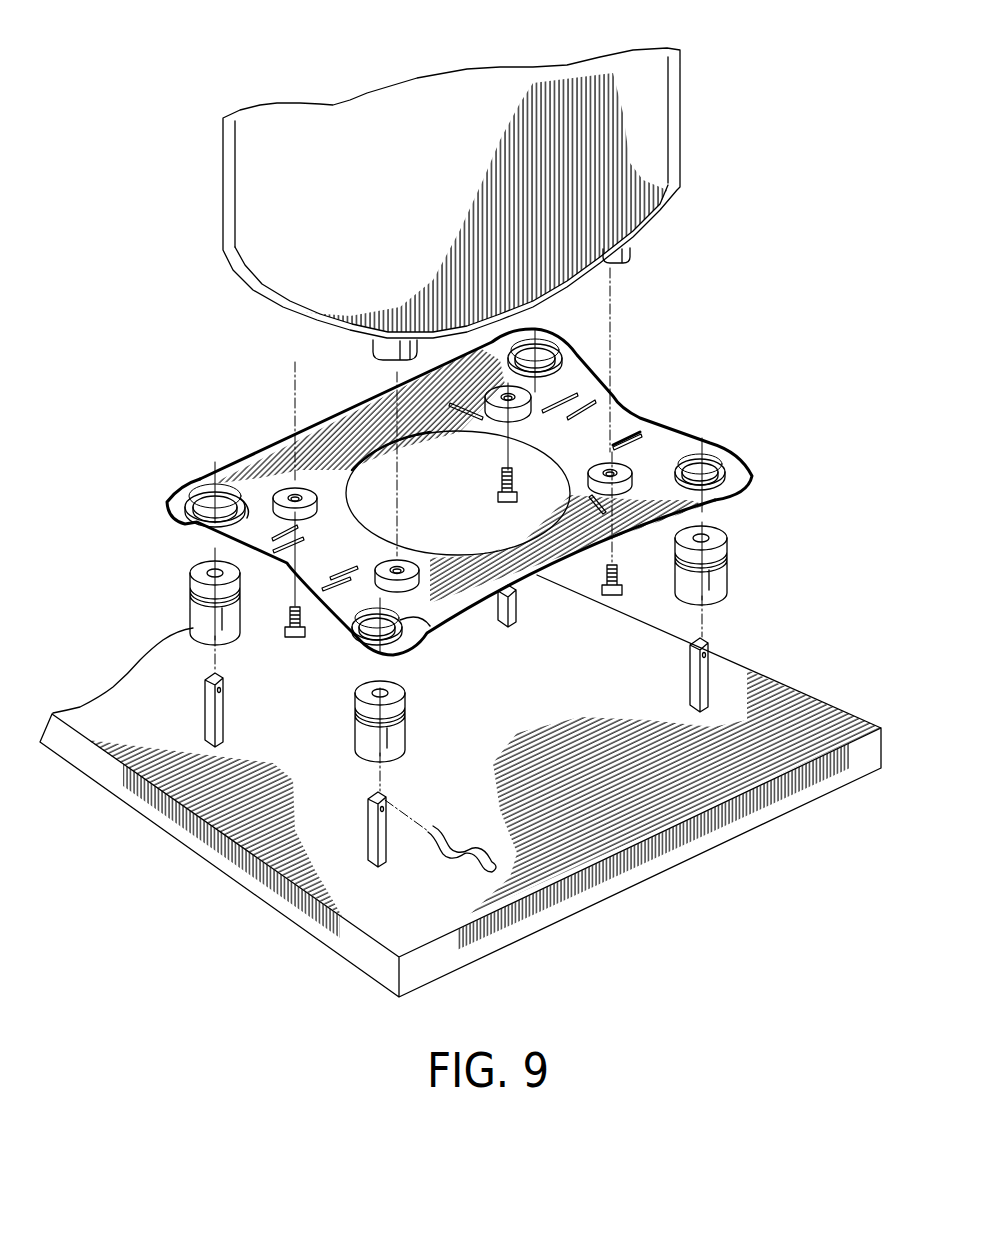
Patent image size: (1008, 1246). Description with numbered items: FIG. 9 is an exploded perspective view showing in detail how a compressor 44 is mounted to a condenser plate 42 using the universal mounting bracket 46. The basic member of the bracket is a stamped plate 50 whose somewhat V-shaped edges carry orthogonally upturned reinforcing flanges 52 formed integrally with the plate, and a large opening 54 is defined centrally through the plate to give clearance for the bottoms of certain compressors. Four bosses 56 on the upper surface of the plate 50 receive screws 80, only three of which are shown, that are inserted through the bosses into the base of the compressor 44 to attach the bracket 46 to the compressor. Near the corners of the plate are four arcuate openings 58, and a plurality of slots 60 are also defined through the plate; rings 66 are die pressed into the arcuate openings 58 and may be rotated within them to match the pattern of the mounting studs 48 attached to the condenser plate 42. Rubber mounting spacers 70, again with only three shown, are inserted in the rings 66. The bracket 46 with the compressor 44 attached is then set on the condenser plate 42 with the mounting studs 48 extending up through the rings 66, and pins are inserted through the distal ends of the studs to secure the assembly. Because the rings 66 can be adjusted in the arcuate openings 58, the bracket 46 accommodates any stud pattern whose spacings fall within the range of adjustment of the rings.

The condenser plate 42 is at (788, 708).
The compressor 44 is at (657, 101).
The universal mounting bracket 46 is at (762, 360).
The mounting studs 48 is at (518, 597).
The stamped plate 50 is at (345, 443).
The reinforcing flanges 52 is at (270, 452).
The large opening 54 is at (565, 467).
The bosses 56 is at (385, 562).
The arcuate openings 58 is at (528, 338).
The slots 60 is at (637, 427).
The rings 66 is at (567, 352).
The rubber mounting spacers 70 is at (197, 612).
The screws 80 is at (498, 481).